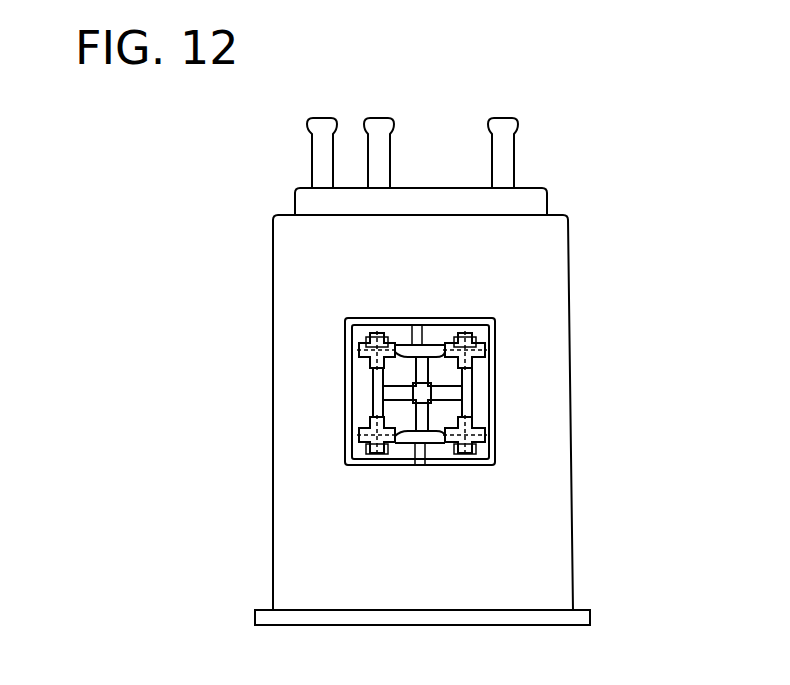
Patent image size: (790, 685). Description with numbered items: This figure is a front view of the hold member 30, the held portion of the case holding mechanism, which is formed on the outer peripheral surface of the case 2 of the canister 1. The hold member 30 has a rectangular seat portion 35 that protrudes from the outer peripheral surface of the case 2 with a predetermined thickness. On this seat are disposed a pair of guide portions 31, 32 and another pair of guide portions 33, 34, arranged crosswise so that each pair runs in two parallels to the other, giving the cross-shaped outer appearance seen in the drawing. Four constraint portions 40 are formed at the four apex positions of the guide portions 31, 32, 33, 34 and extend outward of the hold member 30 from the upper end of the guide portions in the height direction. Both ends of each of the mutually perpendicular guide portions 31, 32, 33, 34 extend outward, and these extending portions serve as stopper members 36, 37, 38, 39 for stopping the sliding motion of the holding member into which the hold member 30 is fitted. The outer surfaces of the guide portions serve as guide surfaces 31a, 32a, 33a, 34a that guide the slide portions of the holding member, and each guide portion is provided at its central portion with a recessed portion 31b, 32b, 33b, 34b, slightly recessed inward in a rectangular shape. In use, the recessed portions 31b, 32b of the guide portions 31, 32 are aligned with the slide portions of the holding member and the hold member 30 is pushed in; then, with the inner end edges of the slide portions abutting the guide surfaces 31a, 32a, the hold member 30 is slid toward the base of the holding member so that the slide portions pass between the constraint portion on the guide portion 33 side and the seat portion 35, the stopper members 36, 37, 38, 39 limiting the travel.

The canister 1 is at (455, 105).
The case 2 is at (287, 562).
The hold member 30 is at (507, 308).
The guide portion 31 is at (497, 382).
The guide surface 31a is at (497, 393).
The recessed portion 31b is at (497, 388).
The guide portion 32 is at (360, 356).
The guide surface 32a is at (365, 398).
The recessed portion 32b is at (365, 390).
The guide portion 33 is at (426, 332).
The guide surface 33a is at (412, 325).
The recessed portion 33b is at (422, 325).
The guide portion 34 is at (430, 465).
The guide surface 34a is at (415, 465).
The recessed portion 34b is at (433, 465).
The seat portion 35 is at (497, 325).
The stopper member 36 is at (490, 350).
The stopper member 37 is at (373, 333).
The stopper member 38 is at (358, 438).
The stopper member 39 is at (468, 322).
The constraint portion 40 is at (358, 340).